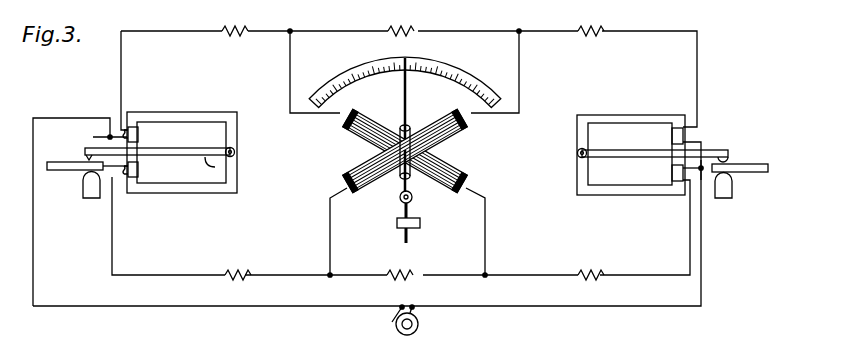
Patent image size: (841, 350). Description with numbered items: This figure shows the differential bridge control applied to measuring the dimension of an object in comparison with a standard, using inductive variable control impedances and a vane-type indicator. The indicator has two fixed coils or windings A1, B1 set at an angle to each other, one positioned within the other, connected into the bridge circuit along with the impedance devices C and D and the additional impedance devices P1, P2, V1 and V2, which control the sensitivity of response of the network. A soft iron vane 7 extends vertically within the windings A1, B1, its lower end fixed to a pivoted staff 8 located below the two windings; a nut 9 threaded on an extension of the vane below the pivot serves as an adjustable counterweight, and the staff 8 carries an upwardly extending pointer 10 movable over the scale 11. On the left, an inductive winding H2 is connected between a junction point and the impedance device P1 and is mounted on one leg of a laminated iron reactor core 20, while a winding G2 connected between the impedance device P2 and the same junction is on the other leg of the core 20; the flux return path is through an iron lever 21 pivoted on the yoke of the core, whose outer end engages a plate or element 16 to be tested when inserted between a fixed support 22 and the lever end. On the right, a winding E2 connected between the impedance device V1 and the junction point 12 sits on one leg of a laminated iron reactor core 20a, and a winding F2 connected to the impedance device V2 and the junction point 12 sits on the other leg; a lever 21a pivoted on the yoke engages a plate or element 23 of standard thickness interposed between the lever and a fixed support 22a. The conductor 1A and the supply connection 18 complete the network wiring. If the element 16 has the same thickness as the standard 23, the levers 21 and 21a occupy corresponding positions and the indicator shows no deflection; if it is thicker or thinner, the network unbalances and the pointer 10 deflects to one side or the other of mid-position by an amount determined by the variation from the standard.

The conductor 1A is at (98, 135).
The soft iron vane 7 is at (400, 127).
The pivoted staff 8 is at (400, 198).
The nut 9 is at (397, 225).
The pointer 10 is at (408, 98).
The scale 11 is at (476, 69).
The junction point 12 is at (703, 175).
The plate or element to be tested 16 is at (55, 161).
The supply terminal 18 is at (419, 323).
The laminated iron reactor core 20 is at (238, 135).
The iron lever 21 is at (238, 170).
The fixed support 22 is at (83, 190).
The laminated iron reactor core 20a is at (578, 120).
The lever 21a is at (585, 158).
The fixed support 22a is at (732, 188).
The plate or element of standard thickness 23 is at (768, 163).
The fixed coil or winding A1 is at (355, 138).
The fixed coil or winding B1 is at (462, 140).
The impedance device C is at (401, 20).
The impedance device D is at (400, 264).
The winding E2 is at (672, 136).
The winding F2 is at (672, 172).
The winding G2 is at (138, 172).
The inductive winding H2 is at (138, 134).
The impedance device P1 is at (235, 42).
The impedance device P2 is at (238, 264).
The impedance device V1 is at (589, 42).
The impedance device V2 is at (591, 264).